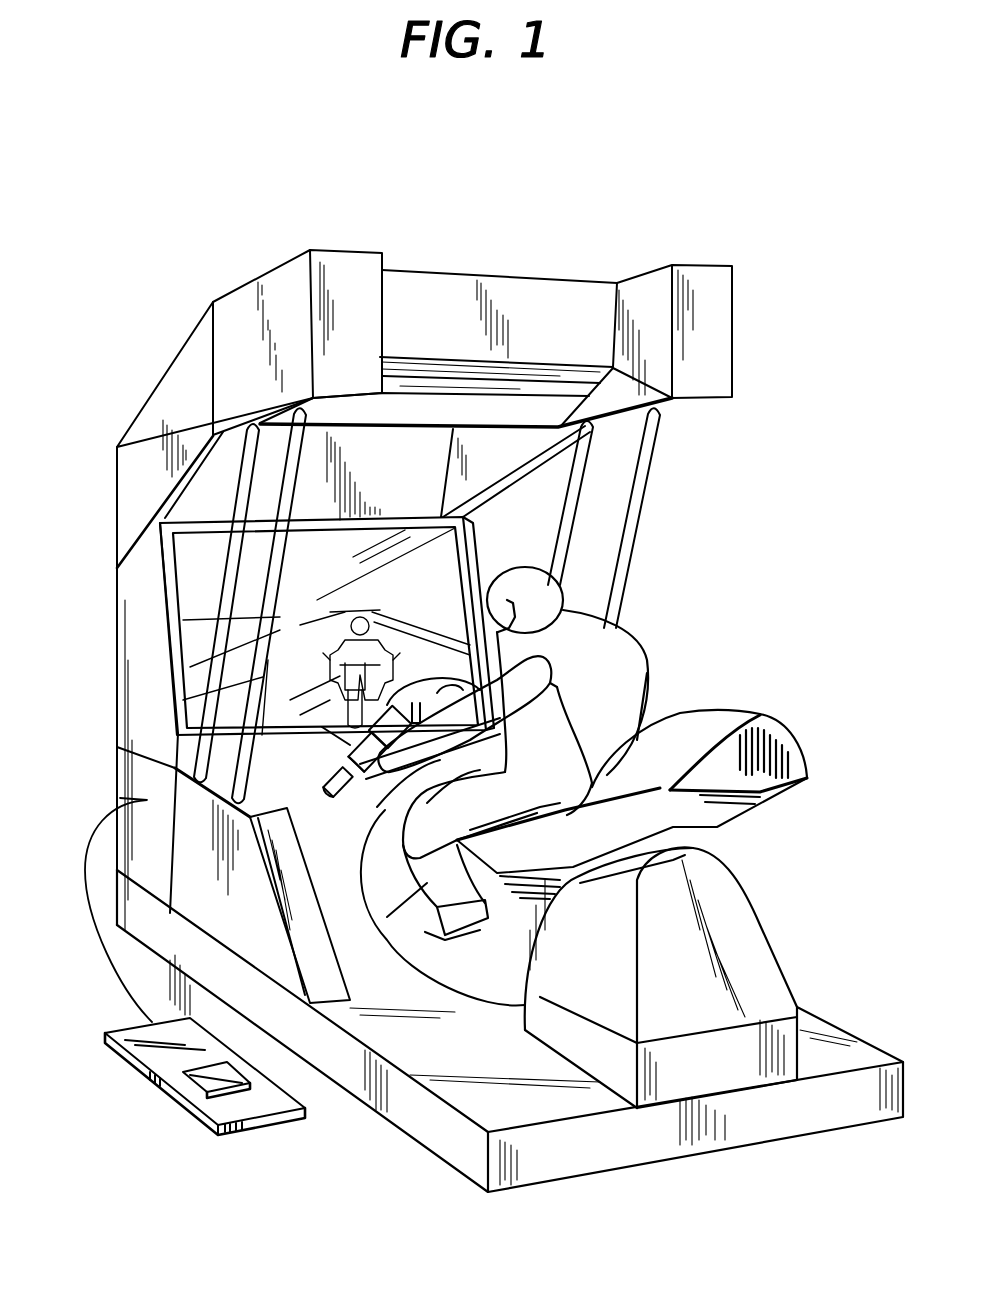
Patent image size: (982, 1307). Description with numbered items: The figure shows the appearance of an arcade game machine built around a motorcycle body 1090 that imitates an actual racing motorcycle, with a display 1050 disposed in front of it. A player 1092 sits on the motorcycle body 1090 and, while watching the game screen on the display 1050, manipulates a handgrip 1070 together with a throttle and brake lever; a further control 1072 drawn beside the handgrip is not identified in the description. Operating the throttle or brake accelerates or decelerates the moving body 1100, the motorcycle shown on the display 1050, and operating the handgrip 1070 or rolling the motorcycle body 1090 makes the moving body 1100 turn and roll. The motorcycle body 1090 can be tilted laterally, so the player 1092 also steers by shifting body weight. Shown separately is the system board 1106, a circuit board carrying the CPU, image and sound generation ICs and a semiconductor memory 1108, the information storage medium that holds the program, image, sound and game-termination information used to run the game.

The display 1050 is at (387, 640).
The moving body 1100 is at (448, 583).
The player 1092 is at (613, 675).
The motorcycle body 1090 is at (713, 727).
The throttle grip 1072 is at (350, 745).
The handgrip 1070 is at (336, 792).
The system board 1106 is at (267, 1103).
The semiconductor memory 1108 is at (205, 1093).